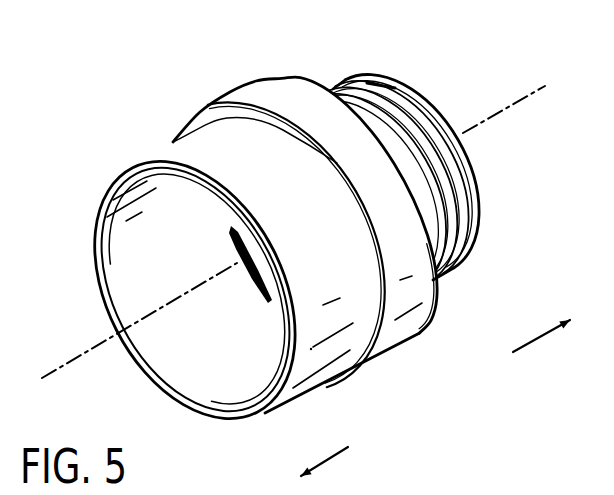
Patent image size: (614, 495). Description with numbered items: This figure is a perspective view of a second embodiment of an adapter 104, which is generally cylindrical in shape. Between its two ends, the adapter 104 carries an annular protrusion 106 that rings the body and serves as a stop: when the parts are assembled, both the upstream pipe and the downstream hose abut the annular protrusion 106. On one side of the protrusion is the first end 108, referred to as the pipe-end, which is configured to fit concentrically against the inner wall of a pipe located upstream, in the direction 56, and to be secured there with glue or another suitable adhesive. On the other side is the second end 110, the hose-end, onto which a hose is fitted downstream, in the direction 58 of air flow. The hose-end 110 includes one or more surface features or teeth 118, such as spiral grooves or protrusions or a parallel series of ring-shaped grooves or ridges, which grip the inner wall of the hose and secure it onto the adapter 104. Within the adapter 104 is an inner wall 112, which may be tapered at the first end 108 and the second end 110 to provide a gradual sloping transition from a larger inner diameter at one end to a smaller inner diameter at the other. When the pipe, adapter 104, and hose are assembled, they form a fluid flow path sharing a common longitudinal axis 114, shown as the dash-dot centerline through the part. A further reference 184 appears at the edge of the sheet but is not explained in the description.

The adapter 104 is at (195, 73).
The annular protrusion 106 is at (277, 93).
The first end 108 is at (176, 155).
The second end 110 is at (418, 164).
The inner wall 112 is at (230, 392).
The common longitudinal axis 114 is at (504, 108).
The surface features or teeth 118 is at (443, 205).
The upstream direction 56 is at (324, 462).
The downstream direction 58 is at (546, 334).
The reference 184 is at (600, 484).